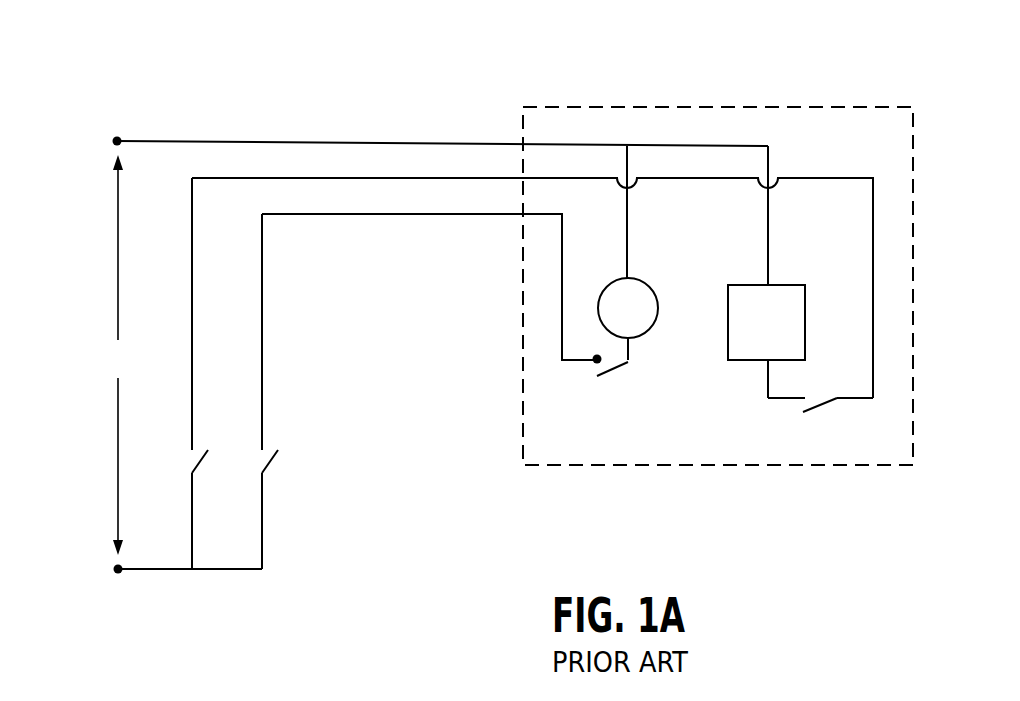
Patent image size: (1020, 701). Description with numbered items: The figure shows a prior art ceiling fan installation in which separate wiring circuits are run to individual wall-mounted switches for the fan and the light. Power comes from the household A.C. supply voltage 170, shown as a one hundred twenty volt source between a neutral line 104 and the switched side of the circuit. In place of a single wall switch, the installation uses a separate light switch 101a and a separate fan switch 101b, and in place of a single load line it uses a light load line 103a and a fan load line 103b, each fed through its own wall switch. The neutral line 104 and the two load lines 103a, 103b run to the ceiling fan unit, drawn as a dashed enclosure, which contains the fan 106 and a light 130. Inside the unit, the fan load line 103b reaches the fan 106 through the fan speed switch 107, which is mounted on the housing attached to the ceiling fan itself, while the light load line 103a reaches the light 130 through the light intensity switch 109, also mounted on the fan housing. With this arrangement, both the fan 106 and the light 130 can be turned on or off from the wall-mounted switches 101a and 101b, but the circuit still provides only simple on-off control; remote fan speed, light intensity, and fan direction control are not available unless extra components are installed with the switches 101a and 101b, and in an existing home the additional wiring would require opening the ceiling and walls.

The neutral line 104 is at (400, 142).
The A.C. supply voltage 170 is at (117, 272).
The light load line 103a is at (370, 178).
The fan load line 103b is at (282, 214).
The light switch 101a is at (205, 465).
The fan switch 101b is at (272, 464).
The fan 106 is at (858, 107).
The fan speed switch 107 is at (563, 382).
The light 130 is at (755, 283).
The light intensity switch 109 is at (820, 405).